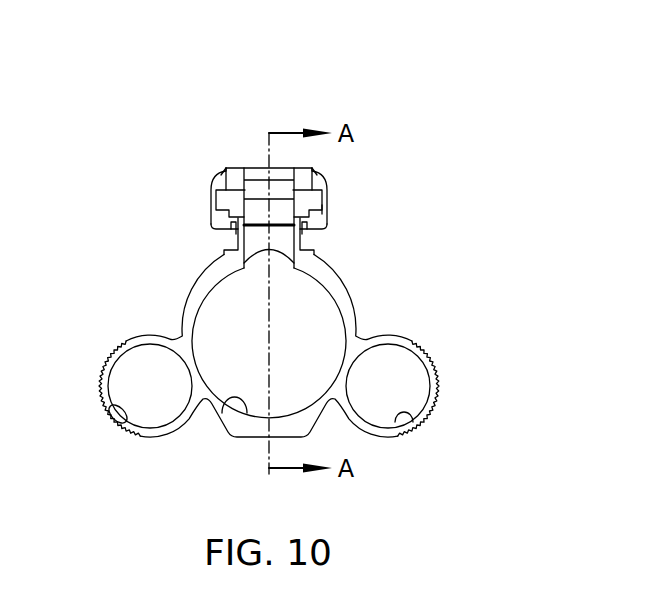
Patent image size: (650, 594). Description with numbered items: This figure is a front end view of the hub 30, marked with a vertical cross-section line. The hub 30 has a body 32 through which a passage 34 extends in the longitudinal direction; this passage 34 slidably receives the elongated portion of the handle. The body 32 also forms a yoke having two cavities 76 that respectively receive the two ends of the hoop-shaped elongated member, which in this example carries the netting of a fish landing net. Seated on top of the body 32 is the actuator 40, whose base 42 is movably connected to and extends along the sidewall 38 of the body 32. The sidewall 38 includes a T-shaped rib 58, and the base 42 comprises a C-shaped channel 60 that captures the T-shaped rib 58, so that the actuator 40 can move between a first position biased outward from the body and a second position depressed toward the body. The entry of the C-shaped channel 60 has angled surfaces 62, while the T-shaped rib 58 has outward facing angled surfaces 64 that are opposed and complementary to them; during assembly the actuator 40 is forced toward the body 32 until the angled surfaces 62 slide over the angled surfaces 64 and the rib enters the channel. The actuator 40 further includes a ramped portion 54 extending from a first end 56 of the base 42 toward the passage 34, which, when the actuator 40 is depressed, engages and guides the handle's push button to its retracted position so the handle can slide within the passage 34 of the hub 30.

The hub 30 is at (440, 407).
The body 32 is at (358, 340).
The passage 34 is at (222, 405).
The sidewall 38 is at (265, 238).
The actuator 40 is at (229, 164).
The base 42 is at (222, 172).
The ramped portion 54 is at (278, 212).
The first end 56 is at (321, 210).
The T-shaped rib 58 is at (303, 200).
The C-shaped channel 60 is at (264, 256).
The angled surfaces 62 is at (235, 233).
The outward facing angled surfaces 64 is at (225, 211).
The cavities 76 is at (112, 413).